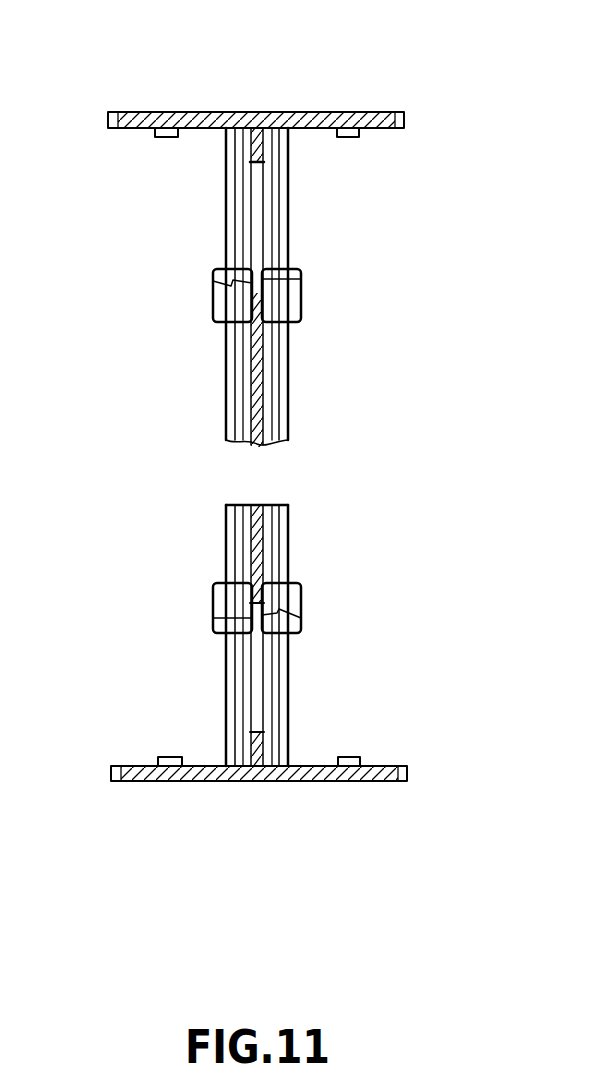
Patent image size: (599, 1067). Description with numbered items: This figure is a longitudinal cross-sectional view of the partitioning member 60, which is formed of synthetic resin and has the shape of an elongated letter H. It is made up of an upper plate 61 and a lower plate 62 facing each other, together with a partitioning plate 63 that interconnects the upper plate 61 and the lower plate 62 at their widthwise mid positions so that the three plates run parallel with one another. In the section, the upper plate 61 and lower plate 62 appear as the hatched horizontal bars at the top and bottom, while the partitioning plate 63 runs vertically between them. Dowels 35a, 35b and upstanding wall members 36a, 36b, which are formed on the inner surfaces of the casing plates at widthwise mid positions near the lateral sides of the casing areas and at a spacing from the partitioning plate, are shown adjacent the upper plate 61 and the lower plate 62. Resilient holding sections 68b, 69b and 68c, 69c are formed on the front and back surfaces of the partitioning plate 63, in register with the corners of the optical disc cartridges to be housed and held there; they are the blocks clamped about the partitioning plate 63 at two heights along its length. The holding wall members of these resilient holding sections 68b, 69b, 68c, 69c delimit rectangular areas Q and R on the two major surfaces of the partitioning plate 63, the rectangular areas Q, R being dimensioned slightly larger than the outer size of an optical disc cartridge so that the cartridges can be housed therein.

The partitioning member 60 is at (398, 416).
The upper plate 61 is at (305, 112).
The lower plate 62 is at (272, 781).
The partitioning plate 63 is at (258, 410).
The dowel 35a is at (166, 131).
The upstanding wall member 36a is at (355, 131).
The dowel 35b is at (170, 760).
The upstanding wall member 36b is at (348, 760).
The resilient holding section 68b is at (213, 292).
The resilient holding section 69b is at (301, 302).
The resilient holding section 68c is at (212, 605).
The resilient holding section 69c is at (303, 613).
The rectangular area Q is at (203, 412).
The rectangular area R is at (323, 547).